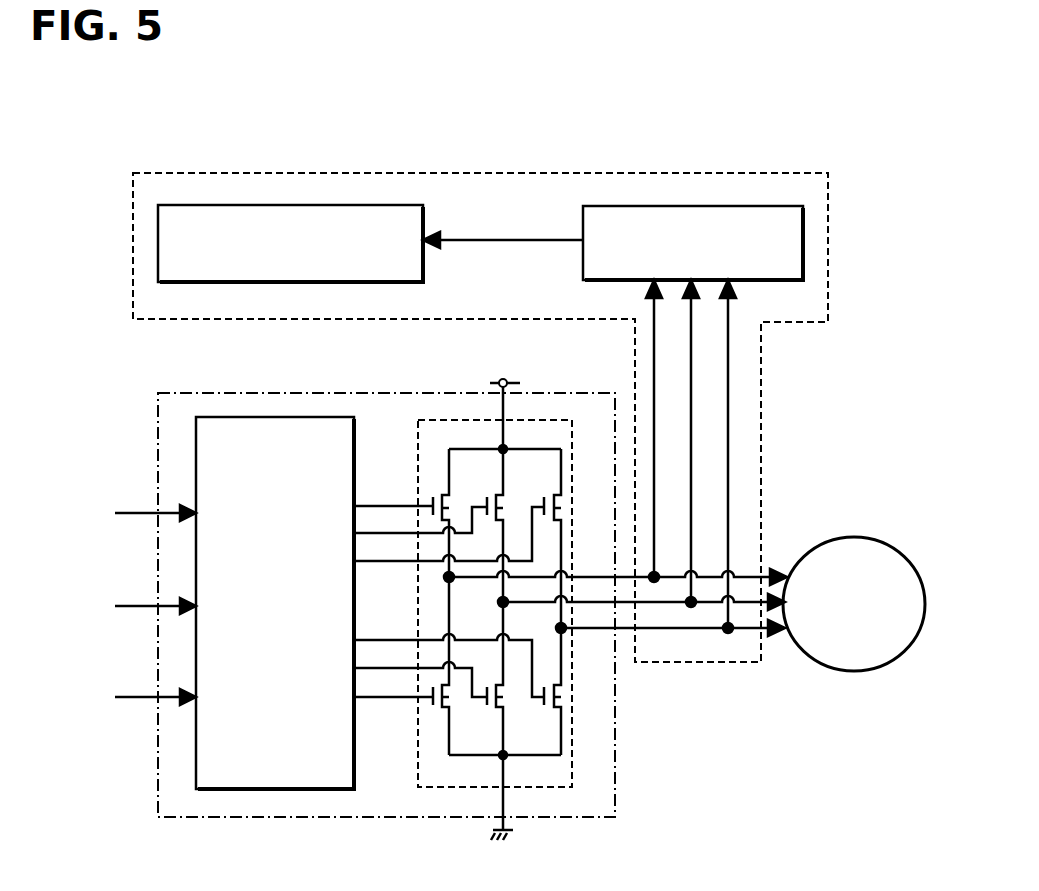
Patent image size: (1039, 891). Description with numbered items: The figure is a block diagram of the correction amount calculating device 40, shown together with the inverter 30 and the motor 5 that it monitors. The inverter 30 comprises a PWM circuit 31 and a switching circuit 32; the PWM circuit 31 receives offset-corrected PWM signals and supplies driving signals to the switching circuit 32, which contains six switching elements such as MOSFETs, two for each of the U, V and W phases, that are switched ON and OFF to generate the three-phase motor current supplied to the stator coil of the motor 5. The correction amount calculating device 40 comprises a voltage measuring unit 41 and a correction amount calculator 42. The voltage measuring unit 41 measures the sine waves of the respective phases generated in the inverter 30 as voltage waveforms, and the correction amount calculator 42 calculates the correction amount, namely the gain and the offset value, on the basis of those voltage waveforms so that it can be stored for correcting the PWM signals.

The motor 5 is at (855, 537).
The inverter 30 is at (158, 412).
The PWM circuit 31 is at (275, 417).
The switching circuit 32 is at (443, 420).
The correction amount calculating device 40 is at (497, 173).
The voltage measuring unit 41 is at (731, 206).
The correction amount calculator 42 is at (276, 205).